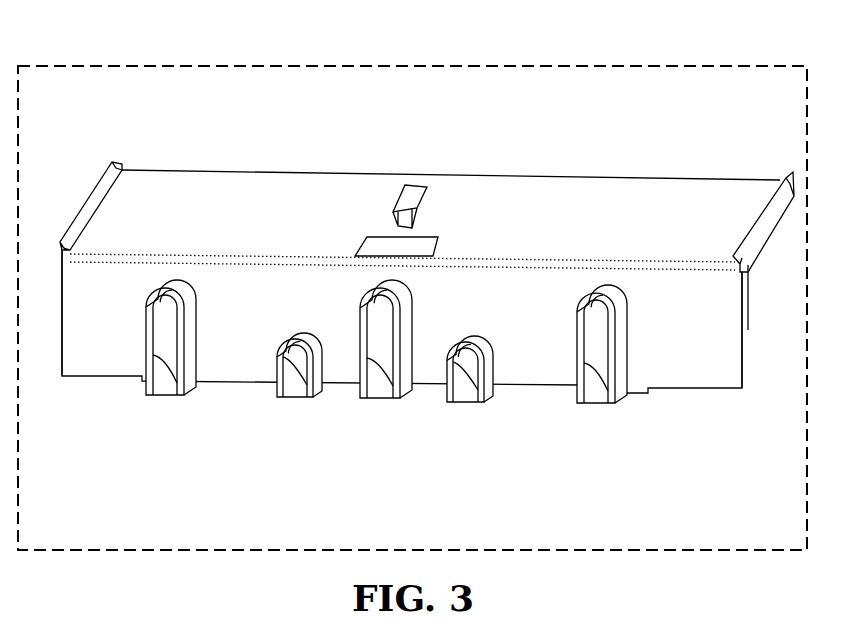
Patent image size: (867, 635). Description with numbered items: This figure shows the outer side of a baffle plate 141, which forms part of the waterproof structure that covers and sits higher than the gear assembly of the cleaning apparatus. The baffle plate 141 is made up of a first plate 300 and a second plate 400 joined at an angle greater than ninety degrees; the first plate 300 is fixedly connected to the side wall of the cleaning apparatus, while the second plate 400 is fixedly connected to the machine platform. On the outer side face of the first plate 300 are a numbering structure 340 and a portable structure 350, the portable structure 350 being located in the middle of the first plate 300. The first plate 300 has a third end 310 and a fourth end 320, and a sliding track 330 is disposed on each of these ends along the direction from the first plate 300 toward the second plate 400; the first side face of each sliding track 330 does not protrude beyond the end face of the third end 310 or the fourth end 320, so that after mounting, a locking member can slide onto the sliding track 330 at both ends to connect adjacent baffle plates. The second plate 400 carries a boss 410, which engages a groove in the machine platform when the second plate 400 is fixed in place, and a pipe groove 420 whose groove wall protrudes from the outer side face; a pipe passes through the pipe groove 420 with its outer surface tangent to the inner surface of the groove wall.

The baffle plate 141 is at (405, 65).
The first plate 300 is at (643, 205).
The third end 310 is at (62, 345).
The fourth end 320 is at (748, 330).
The sliding track 330 is at (122, 168).
The numbering structure 340 is at (437, 255).
The portable structure 350 is at (428, 190).
The second plate 400 is at (424, 404).
The boss 410 is at (140, 383).
The pipe groove 420 is at (581, 403).